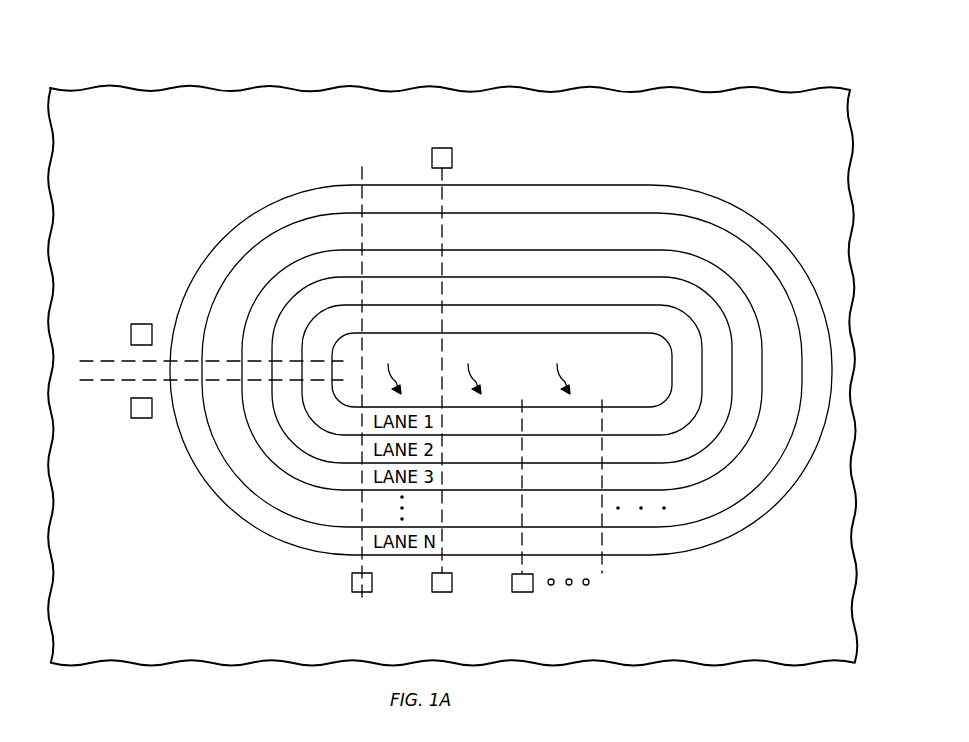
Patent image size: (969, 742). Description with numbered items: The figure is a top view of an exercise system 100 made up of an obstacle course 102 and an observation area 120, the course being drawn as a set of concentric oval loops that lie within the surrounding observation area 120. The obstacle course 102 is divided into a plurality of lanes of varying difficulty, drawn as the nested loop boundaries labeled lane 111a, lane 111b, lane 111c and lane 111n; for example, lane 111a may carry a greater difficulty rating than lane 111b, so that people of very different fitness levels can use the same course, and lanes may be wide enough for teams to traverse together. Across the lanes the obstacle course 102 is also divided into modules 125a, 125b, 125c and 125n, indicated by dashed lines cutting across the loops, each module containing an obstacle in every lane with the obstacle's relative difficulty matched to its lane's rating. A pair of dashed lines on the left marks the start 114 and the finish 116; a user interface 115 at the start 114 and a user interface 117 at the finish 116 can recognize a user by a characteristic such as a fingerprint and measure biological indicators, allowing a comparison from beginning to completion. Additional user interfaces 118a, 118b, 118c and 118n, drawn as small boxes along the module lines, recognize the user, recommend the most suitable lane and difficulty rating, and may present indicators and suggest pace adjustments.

The exercise system 100 is at (692, 72).
The observation area 120 is at (247, 90).
The obstacle course 102 is at (203, 207).
The lane 111a is at (610, 325).
The lane 111b is at (550, 286).
The lane 111c is at (490, 258).
The lane 111n is at (672, 192).
The start 114 is at (108, 409).
The user interface 115 is at (142, 419).
The finish 116 is at (108, 361).
The user interface 117 is at (143, 323).
The user interface 118a is at (362, 593).
The user interface 118b is at (442, 593).
The user interface 118c is at (522, 593).
The user interface 118n is at (445, 148).
The module 125a is at (387, 368).
The module 125b is at (467, 368).
The module 125c is at (557, 368).
The module 125n is at (400, 163).